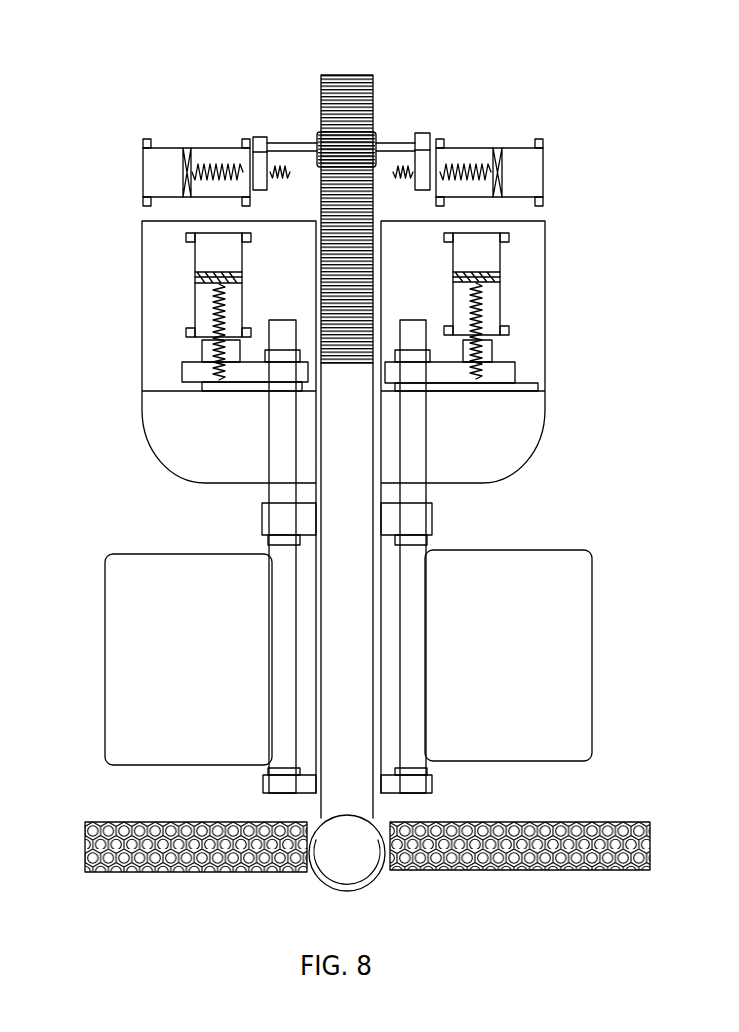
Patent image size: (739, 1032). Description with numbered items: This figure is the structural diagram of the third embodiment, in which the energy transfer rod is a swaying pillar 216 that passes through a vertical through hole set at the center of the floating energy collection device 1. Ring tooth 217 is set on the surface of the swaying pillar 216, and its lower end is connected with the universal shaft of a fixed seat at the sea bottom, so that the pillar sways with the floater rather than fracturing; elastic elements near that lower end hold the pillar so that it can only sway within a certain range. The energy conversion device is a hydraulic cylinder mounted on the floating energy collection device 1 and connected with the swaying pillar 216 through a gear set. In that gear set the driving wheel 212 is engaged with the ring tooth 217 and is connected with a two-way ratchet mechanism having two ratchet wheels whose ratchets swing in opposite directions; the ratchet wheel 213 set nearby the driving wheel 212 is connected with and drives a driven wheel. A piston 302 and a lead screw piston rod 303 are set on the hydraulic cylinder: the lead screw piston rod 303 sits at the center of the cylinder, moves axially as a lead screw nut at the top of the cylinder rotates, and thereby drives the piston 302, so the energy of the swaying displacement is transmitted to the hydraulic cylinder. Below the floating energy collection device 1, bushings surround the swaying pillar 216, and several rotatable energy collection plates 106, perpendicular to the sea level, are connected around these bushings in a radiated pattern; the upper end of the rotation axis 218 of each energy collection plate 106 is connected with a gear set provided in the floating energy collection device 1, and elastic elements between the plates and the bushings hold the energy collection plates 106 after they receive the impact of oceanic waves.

The floating energy collection device 1 is at (628, 231).
The energy collection plate 106 is at (558, 700).
The driving wheel 212 is at (340, 150).
The ratchet wheel 213 is at (450, 139).
The swaying pillar 216 is at (362, 645).
The ring tooth 217 is at (345, 93).
The rotation axis 218 is at (283, 637).
The piston 302 is at (180, 147).
The lead screw piston rod 303 is at (223, 150).